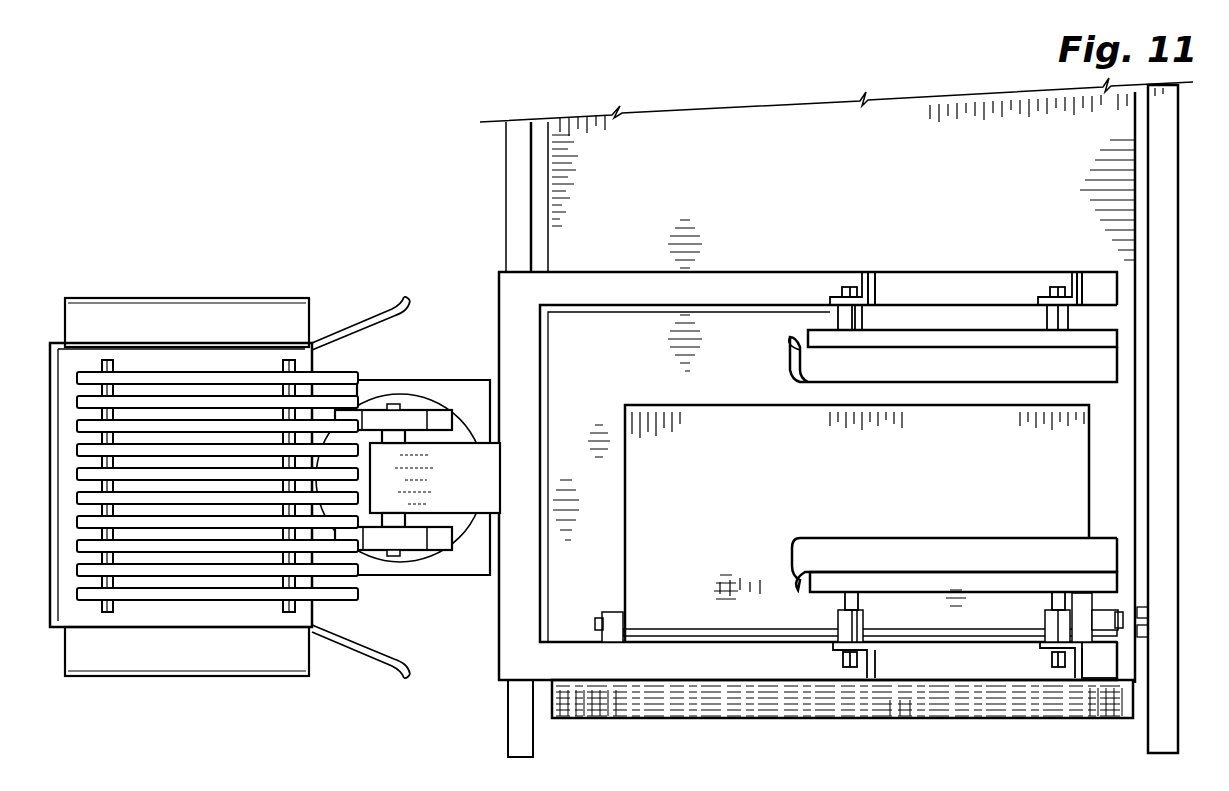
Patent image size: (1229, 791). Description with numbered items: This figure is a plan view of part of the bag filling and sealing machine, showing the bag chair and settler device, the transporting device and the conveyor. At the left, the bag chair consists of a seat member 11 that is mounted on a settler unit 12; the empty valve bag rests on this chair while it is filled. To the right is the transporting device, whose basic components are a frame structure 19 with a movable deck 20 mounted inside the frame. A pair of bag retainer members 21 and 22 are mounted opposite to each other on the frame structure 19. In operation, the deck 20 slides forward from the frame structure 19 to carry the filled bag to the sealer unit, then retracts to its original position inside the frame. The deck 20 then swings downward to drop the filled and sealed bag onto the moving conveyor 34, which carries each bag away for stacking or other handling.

The seat member 11 is at (80, 544).
The settler unit 12 is at (57, 610).
The frame structure 19 is at (573, 285).
The movable deck 20 is at (1073, 488).
The bag retainer member 21 is at (797, 362).
The bag retainer member 22 is at (797, 566).
The moving conveyor 34 is at (922, 108).